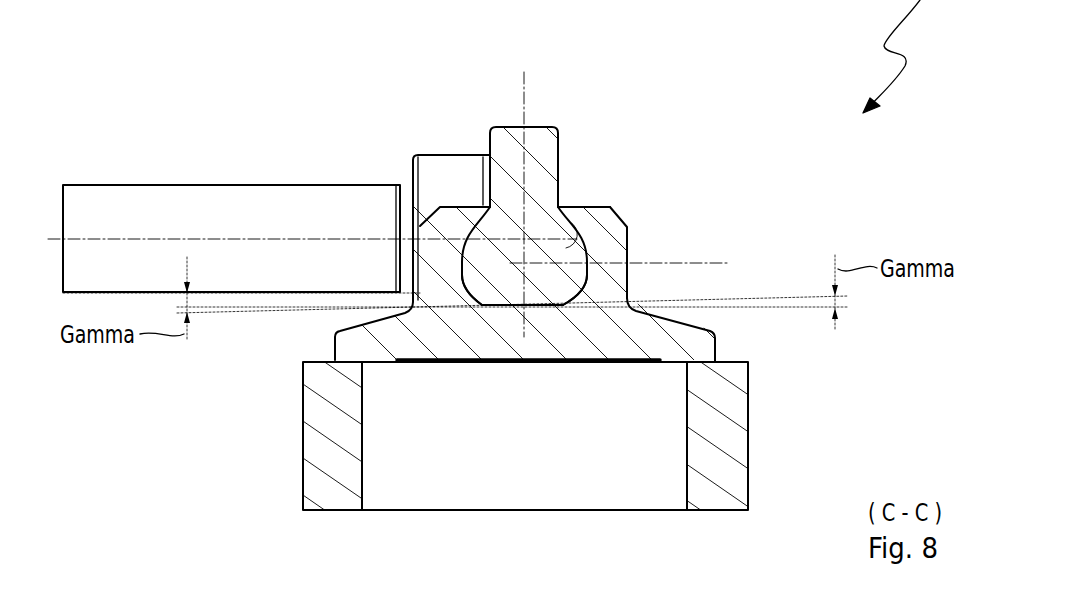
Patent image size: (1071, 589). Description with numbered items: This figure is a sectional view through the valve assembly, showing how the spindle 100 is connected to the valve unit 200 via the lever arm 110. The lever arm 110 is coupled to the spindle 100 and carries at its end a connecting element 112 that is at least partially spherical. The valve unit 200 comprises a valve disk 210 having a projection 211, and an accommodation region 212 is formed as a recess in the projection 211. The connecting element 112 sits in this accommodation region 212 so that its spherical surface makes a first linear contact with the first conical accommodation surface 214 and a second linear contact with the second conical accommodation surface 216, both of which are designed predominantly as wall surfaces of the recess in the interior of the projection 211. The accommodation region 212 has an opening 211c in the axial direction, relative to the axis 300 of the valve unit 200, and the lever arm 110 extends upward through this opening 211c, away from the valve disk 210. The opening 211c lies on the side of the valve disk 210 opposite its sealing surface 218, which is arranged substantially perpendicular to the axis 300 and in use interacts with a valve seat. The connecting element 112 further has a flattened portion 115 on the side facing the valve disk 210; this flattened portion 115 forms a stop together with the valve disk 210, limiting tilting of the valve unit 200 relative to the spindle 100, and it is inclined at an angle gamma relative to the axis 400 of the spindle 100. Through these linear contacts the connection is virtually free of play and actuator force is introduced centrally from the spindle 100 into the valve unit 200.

The spindle 100 is at (197, 183).
The axis of spindle 400 is at (276, 236).
The axis of valve unit 300 is at (522, 120).
The lever arm 110 is at (548, 118).
The connecting element 112 is at (490, 292).
The flattened portion 115 is at (520, 295).
The valve unit 200 is at (730, 192).
The valve disk 210 is at (728, 342).
The projection 211 is at (618, 252).
The opening 211c is at (496, 178).
The accommodation region 212 is at (566, 210).
The first conical accommodation surface 214 is at (563, 292).
The second conical accommodation surface 216 is at (588, 252).
The sealing surface 218 is at (348, 364).